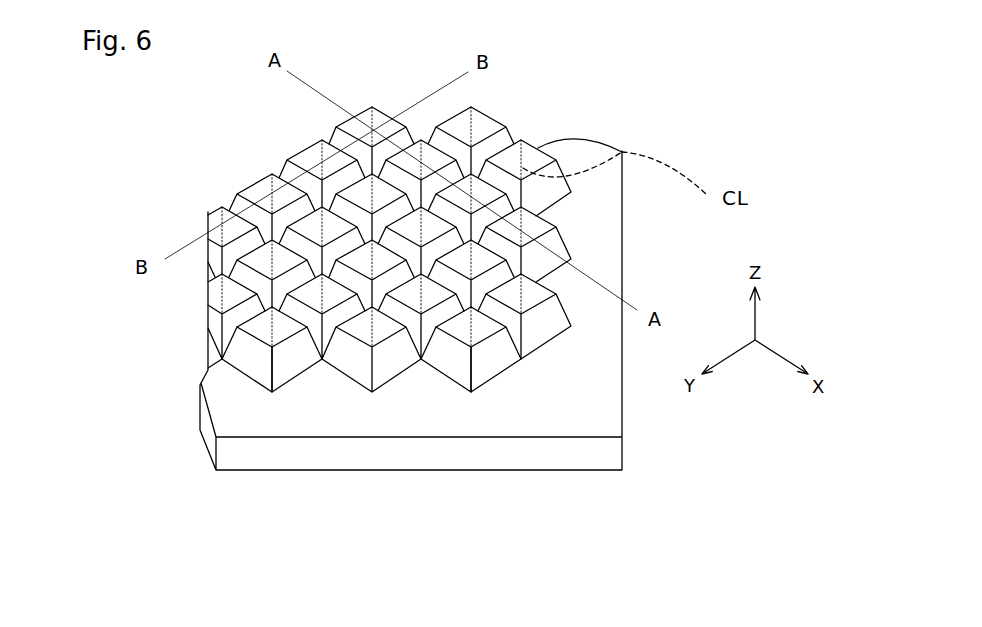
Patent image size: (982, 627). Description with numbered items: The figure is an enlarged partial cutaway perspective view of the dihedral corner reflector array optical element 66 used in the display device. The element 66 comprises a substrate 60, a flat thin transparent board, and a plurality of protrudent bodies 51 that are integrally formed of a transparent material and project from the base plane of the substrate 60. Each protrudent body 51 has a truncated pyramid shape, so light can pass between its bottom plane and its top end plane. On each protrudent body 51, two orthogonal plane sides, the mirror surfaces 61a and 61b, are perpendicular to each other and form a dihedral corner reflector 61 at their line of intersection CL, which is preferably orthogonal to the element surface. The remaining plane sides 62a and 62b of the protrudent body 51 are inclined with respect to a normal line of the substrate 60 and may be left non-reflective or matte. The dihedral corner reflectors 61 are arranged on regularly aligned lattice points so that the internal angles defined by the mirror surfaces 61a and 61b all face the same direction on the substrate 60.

The protrudent body 51 is at (378, 97).
The substrate 60 is at (598, 400).
The dihedral corner reflector 61 is at (470, 442).
The mirror surface 61a is at (478, 362).
The mirror surface 61b is at (462, 363).
The plane side 62a is at (257, 372).
The plane side 62b is at (288, 368).
The dihedral corner reflector array optical element 66 is at (427, 299).